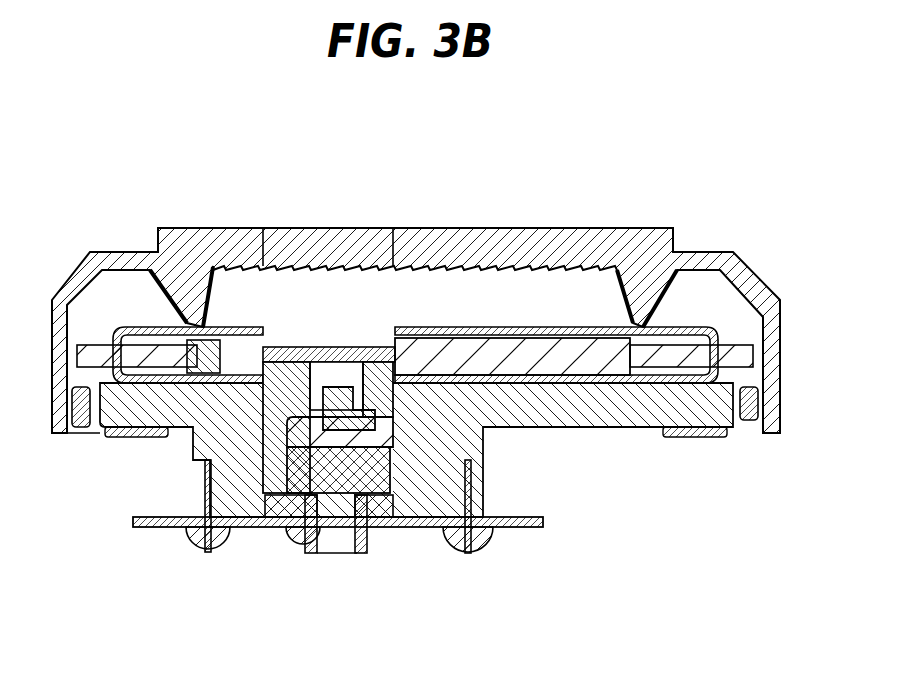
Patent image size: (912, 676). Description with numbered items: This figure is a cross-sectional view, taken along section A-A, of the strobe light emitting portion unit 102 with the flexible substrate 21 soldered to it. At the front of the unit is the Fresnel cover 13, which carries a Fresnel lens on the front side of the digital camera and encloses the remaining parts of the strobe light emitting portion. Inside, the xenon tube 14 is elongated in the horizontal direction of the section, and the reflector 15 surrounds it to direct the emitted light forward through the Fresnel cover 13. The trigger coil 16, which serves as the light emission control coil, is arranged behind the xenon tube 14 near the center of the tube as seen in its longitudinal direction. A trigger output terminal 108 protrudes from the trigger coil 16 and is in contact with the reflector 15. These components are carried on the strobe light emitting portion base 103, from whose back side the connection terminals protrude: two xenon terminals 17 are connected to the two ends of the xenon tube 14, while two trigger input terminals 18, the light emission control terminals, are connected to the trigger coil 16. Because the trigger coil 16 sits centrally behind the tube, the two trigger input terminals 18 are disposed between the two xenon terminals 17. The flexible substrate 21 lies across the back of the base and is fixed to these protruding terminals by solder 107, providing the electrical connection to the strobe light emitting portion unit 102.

The strobe light emitting portion unit 102 is at (268, 188).
The Fresnel cover 13 is at (140, 250).
The xenon tube 14 is at (470, 337).
The reflector 15 is at (338, 372).
The trigger coil 16 is at (340, 463).
The xenon terminals 17 is at (101, 434).
The trigger input terminals 18 is at (357, 553).
The flexible substrate 21 is at (543, 522).
The strobe light emitting portion base 103 is at (222, 430).
The solder 107 is at (290, 548).
The trigger output terminal 108 is at (480, 453).